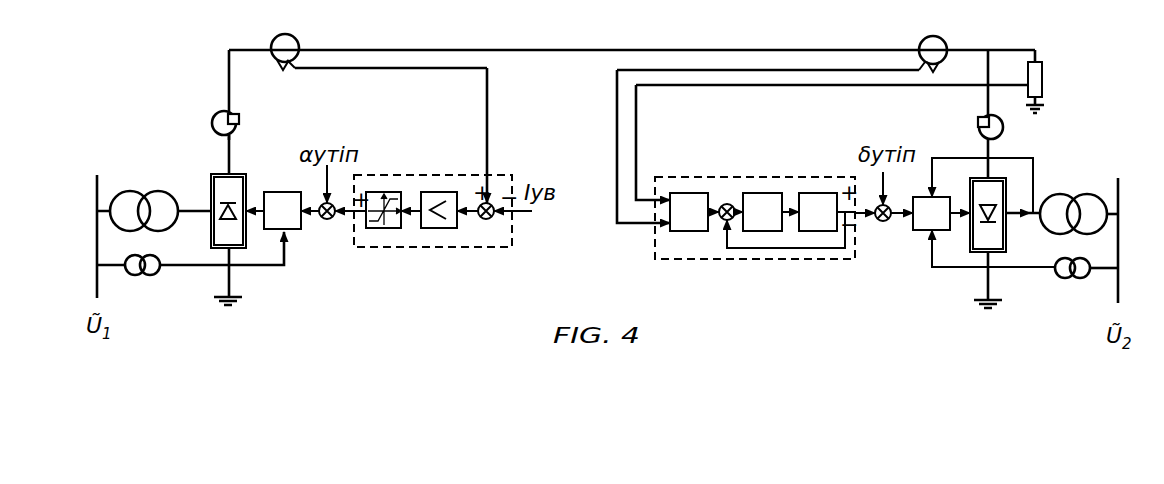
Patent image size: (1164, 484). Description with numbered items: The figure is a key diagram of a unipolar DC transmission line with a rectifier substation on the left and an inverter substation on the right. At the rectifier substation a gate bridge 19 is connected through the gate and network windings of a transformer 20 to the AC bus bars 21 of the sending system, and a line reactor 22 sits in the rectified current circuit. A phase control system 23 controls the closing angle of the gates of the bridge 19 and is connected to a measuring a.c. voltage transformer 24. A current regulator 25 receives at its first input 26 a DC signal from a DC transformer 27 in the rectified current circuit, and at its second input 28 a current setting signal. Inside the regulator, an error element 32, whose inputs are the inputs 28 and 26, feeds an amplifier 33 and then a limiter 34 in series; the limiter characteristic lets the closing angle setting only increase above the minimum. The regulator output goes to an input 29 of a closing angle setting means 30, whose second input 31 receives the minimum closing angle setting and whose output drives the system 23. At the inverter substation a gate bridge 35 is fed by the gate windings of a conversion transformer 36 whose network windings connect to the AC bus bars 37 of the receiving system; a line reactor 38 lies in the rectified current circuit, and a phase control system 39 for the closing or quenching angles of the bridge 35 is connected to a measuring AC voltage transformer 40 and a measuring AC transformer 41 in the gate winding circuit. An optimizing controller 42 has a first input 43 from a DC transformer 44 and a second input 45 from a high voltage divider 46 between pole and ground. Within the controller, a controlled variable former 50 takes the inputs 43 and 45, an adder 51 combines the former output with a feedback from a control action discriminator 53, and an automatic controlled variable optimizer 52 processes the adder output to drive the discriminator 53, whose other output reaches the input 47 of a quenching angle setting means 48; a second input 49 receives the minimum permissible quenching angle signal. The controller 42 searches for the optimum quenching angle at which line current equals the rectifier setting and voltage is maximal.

The gate bridge 19 is at (247, 181).
The transformer 20 is at (153, 191).
The AC bus bars 21 is at (98, 224).
The line reactor 22 is at (237, 118).
The phase control system 23 is at (273, 210).
The measuring a.c. voltage transformer 24 is at (153, 262).
The current regulator 25 is at (448, 173).
The first input 26 is at (492, 160).
The DC transformer 27 is at (294, 44).
The second input 28 is at (517, 214).
The input 29 is at (344, 216).
The closing angle setting means 30 is at (323, 220).
The second input 31 is at (339, 182).
The error element 32 is at (489, 220).
The amplifier 33 is at (430, 192).
The limiter 34 is at (386, 192).
The gate bridge 35 is at (997, 190).
The conversion transformer 36 is at (1069, 193).
The AC bus bars 37 is at (1118, 178).
The line reactor 38 is at (979, 127).
The phase control system 39 is at (946, 197).
The measuring AC voltage transformer 40 is at (1084, 261).
The measuring AC transformer 41 is at (1027, 222).
The optimizing controller 42 is at (792, 177).
The first input 43 is at (644, 228).
The DC transformer 44 is at (942, 45).
The second input 45 is at (636, 183).
The high voltage divider 46 is at (1042, 80).
The input 47 is at (870, 223).
The quenching angle setting means 48 is at (898, 232).
The second input 49 is at (898, 187).
The controlled variable former 50 is at (703, 193).
The adder 51 is at (726, 204).
The automatic controlled variable optimizer 52 is at (751, 193).
The control action discriminator 53 is at (821, 193).